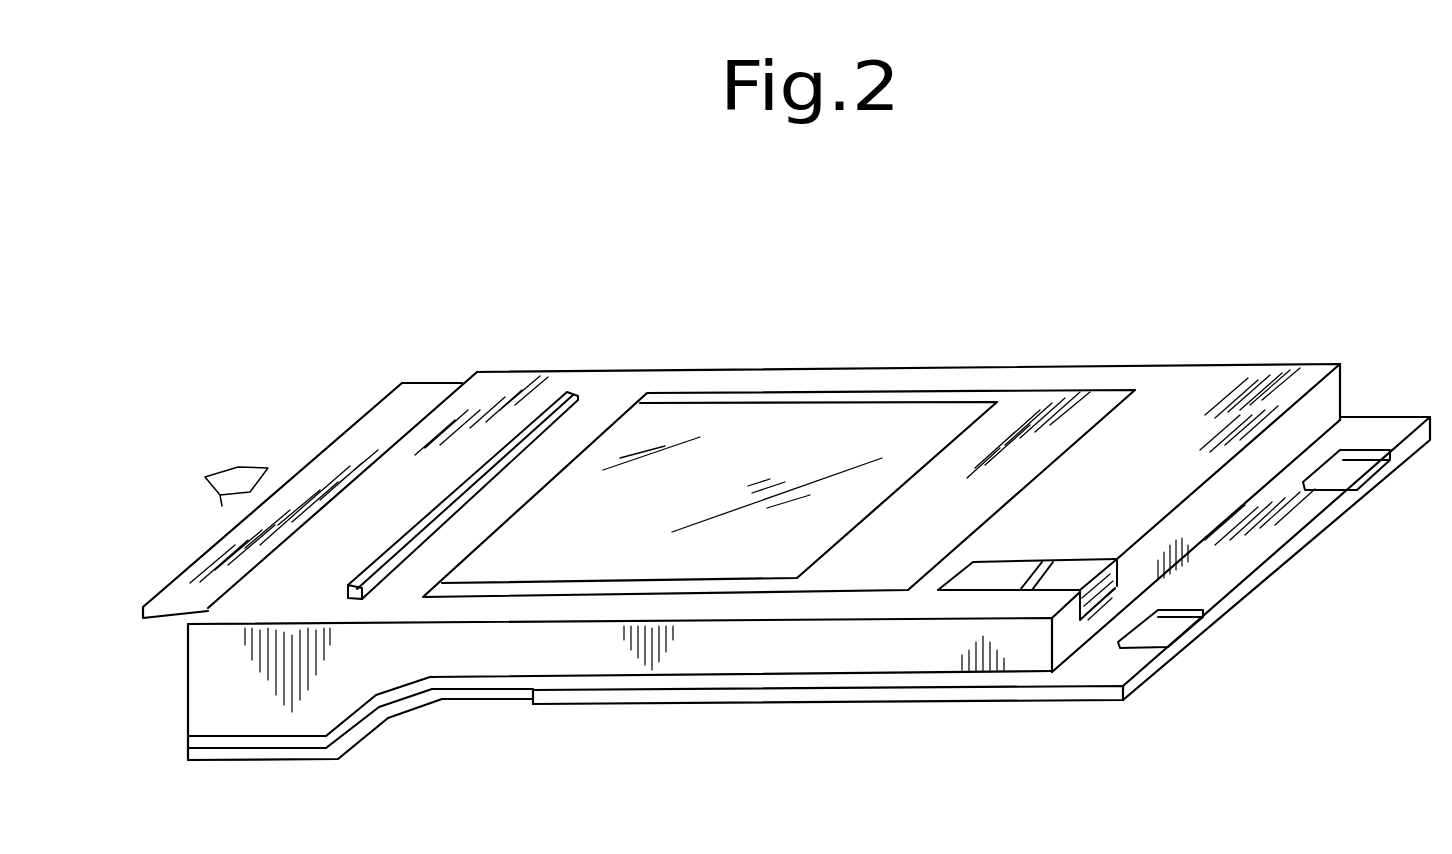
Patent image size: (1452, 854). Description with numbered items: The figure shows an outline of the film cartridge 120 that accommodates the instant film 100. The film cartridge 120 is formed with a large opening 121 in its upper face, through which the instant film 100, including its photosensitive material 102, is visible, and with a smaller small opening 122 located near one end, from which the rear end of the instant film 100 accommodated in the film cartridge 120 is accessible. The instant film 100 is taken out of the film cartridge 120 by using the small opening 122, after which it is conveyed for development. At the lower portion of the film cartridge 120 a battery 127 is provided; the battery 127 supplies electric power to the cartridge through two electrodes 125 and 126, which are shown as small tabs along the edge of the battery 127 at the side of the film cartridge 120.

The instant film 100 is at (365, 418).
The photosensitive material 102 is at (710, 420).
The film cartridge 120 is at (884, 342).
The large opening 121 is at (962, 392).
The small opening 122 is at (1014, 577).
The electrode 125 is at (1181, 634).
The electrode 126 is at (1352, 488).
The battery 127 is at (697, 702).